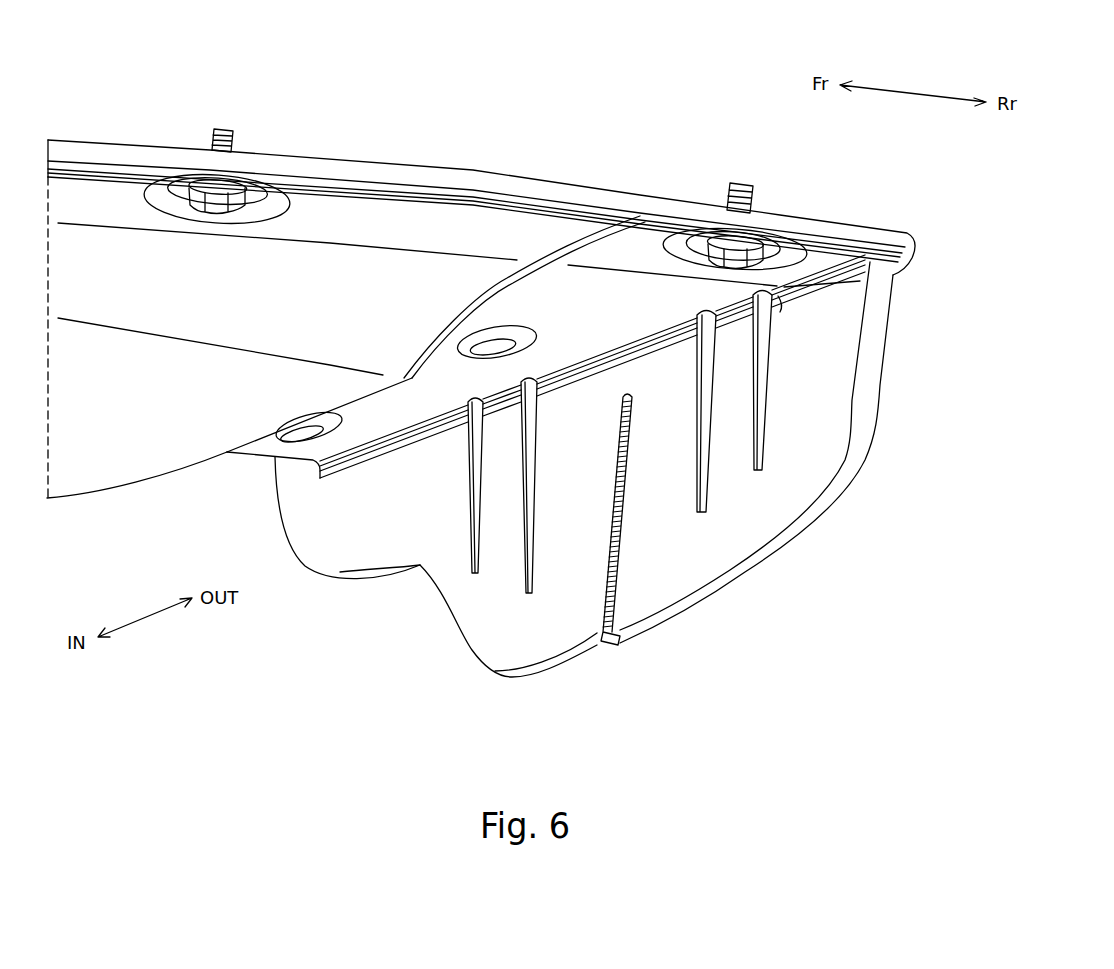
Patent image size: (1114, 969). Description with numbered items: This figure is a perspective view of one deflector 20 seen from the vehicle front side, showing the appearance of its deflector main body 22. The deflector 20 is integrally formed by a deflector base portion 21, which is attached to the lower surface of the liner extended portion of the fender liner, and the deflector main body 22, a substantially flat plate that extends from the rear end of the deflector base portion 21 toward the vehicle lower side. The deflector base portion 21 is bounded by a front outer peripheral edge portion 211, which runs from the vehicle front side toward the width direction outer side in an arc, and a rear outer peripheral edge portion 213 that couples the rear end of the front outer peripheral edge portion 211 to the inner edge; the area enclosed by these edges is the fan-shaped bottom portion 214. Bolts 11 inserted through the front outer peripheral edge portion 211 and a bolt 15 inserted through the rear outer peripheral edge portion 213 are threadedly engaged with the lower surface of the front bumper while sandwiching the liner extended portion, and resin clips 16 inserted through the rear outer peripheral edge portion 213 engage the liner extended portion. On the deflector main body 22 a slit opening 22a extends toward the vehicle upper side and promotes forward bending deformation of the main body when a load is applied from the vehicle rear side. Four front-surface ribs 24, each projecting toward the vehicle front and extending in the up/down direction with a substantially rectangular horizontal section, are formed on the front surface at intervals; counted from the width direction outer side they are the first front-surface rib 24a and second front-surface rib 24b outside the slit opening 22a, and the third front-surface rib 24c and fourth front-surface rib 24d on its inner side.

The deflector 20 is at (138, 95).
The deflector base portion 21 is at (481, 328).
The front outer peripheral edge portion 211 is at (432, 218).
The rear outer peripheral edge portion 213 is at (641, 264).
The fan-shaped bottom portion 214 is at (123, 440).
The bolt 11 is at (232, 262).
The bolt 15 is at (722, 272).
The resin clip 16 is at (511, 366).
The deflector main body 22 is at (822, 365).
The slit opening 22a is at (604, 607).
The front-surface rib 24 is at (632, 493).
The first front-surface rib 24a is at (760, 402).
The second front-surface rib 24b is at (697, 447).
The third front-surface rib 24c is at (527, 543).
The fourth front-surface rib 24d is at (458, 486).